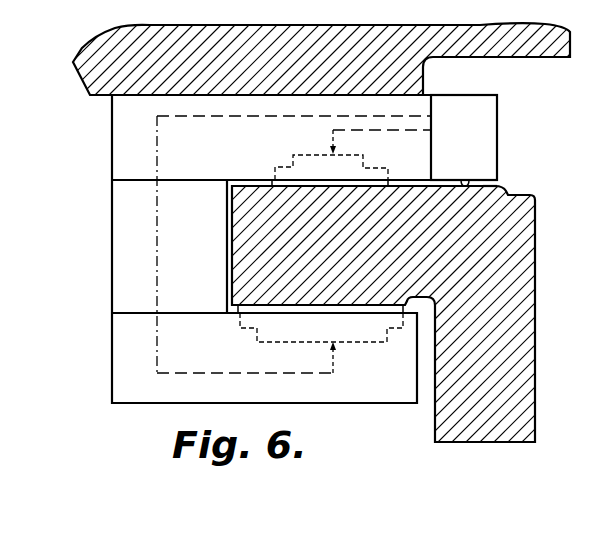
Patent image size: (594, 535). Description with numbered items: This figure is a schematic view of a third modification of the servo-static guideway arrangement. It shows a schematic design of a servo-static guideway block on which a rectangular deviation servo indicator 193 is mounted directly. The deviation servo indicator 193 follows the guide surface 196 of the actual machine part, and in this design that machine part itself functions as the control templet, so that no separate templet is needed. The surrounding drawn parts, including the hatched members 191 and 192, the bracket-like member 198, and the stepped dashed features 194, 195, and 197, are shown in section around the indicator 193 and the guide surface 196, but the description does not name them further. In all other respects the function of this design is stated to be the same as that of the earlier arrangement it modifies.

The rotor body 191 is at (502, 442).
The stator housing 192 is at (517, 58).
The rectangular deviation servo indicator 193 is at (488, 138).
The upper labyrinth step 194 is at (270, 180).
The lower labyrinth step 195 is at (238, 307).
The guide surface 196 is at (483, 185).
The recess 197 is at (260, 300).
The bracket 198 is at (118, 228).